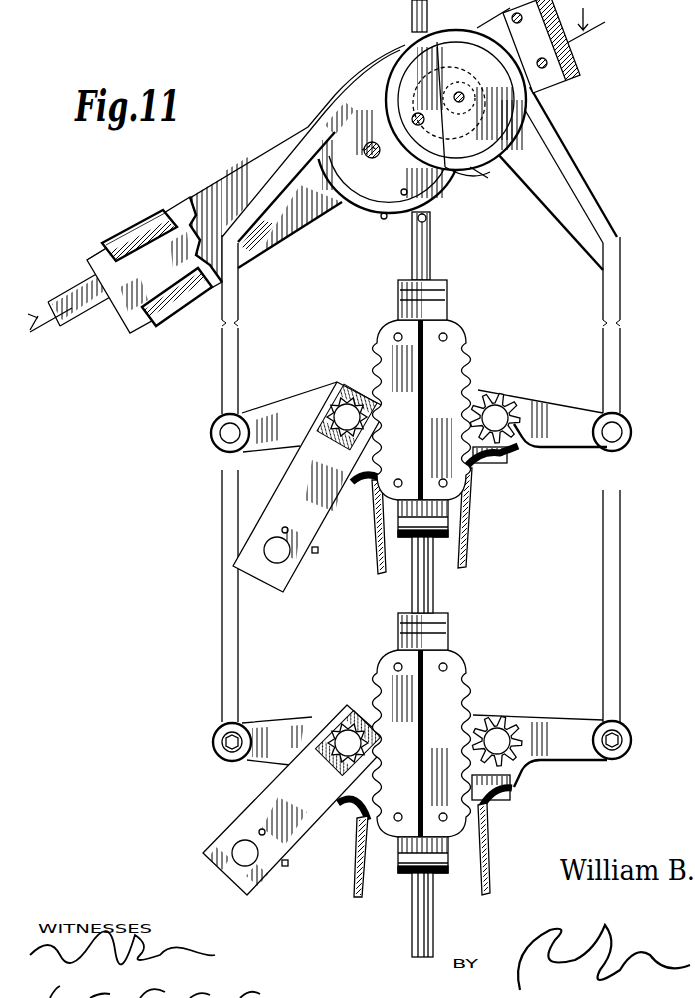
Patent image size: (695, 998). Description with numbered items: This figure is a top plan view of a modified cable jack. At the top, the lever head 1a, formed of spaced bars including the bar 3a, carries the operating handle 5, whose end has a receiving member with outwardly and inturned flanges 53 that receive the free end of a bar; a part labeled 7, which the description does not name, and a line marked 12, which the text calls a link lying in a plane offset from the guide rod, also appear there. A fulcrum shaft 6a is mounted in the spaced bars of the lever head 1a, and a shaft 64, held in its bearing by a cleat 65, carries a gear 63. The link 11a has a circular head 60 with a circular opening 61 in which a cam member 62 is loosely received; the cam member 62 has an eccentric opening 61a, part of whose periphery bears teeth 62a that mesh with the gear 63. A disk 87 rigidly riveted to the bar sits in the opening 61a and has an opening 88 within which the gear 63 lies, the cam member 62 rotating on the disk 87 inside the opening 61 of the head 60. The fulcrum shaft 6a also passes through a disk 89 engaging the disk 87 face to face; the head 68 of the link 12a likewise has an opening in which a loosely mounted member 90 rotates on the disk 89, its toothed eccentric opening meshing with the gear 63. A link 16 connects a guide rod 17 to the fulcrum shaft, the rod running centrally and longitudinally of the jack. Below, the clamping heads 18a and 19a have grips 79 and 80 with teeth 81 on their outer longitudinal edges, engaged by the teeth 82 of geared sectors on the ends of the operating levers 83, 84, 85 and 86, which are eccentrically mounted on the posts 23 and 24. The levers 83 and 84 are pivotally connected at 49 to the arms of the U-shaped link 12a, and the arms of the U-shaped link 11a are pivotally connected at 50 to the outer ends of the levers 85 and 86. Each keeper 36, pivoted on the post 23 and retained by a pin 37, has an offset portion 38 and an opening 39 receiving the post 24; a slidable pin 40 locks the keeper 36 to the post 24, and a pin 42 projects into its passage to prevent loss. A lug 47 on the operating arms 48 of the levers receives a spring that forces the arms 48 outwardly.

The lever head 1a is at (246, 163).
The bar 3a is at (264, 161).
The operating handle 5 is at (60, 296).
The flanges 53 is at (134, 230).
The link 12 is at (312, 174).
The shaft 7 is at (412, 36).
The fulcrum shaft 6a is at (461, 66).
The cleat 65 is at (525, 46).
The cam member 62 is at (532, 99).
The teeth 62a is at (431, 119).
The shaft 64 is at (466, 94).
The opening 88 is at (422, 141).
The circular head 60 is at (513, 138).
The circular opening 61 is at (489, 149).
The eccentric opening 61a is at (486, 179).
The disk 87 is at (467, 178).
The link 16 is at (431, 208).
The guide rod 17 is at (432, 245).
The gear 63 is at (402, 138).
The disk 89 is at (409, 185).
The head 68 is at (360, 220).
The loosely mounted member 90 is at (384, 218).
The U-shaped link 12a is at (574, 248).
The U-shaped link 11a is at (242, 320).
The pivotal connection 49 is at (219, 448).
The pivotal connection 50 is at (217, 750).
The grip 79 is at (390, 320).
The grip 80 is at (398, 654).
The teeth 81 is at (376, 354).
The clamping head 18a is at (437, 428).
The clamping head 19a is at (437, 761).
The operating lever 83 is at (283, 399).
The operating lever 84 is at (574, 394).
The operating lever 85 is at (281, 723).
The operating lever 86 is at (555, 717).
The teeth 82 is at (504, 374).
The pin 37 is at (334, 387).
The offset portion 38 is at (355, 392).
The post 23 is at (334, 419).
The post 24 is at (502, 416).
The keeper 36 is at (281, 474).
The pin 42 is at (285, 528).
The opening 39 is at (286, 584).
The pin 40 is at (317, 568).
The lug 47 is at (421, 644).
The operating arms 48 is at (387, 574).